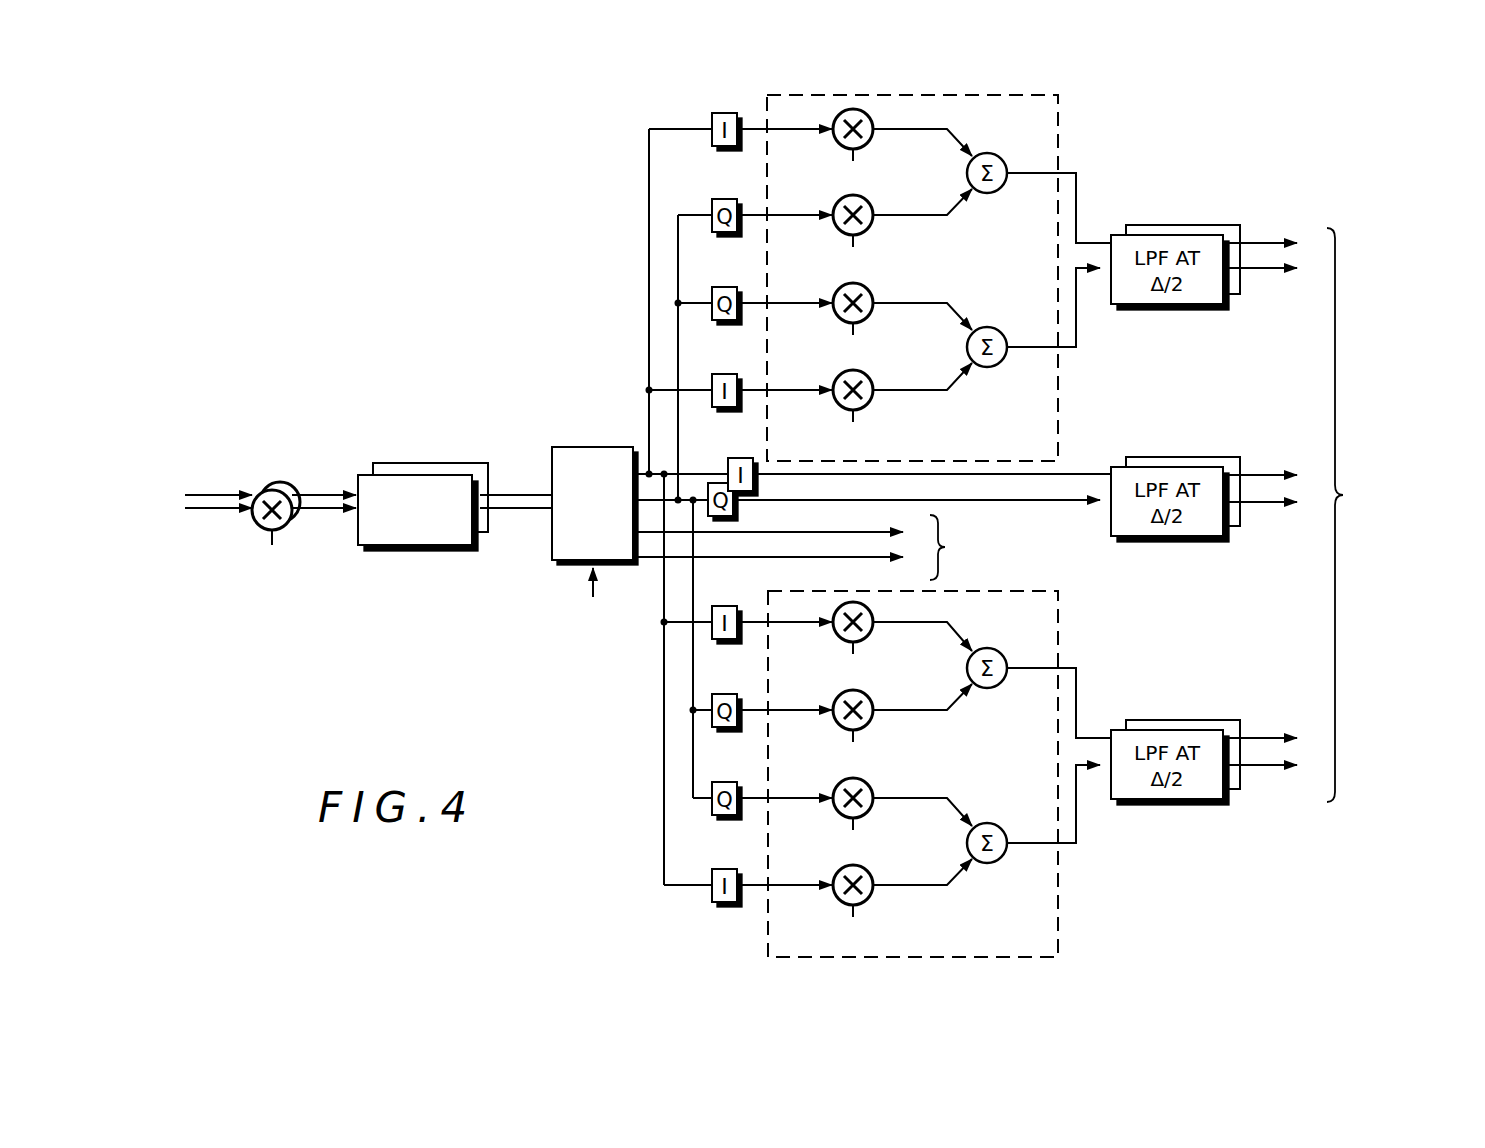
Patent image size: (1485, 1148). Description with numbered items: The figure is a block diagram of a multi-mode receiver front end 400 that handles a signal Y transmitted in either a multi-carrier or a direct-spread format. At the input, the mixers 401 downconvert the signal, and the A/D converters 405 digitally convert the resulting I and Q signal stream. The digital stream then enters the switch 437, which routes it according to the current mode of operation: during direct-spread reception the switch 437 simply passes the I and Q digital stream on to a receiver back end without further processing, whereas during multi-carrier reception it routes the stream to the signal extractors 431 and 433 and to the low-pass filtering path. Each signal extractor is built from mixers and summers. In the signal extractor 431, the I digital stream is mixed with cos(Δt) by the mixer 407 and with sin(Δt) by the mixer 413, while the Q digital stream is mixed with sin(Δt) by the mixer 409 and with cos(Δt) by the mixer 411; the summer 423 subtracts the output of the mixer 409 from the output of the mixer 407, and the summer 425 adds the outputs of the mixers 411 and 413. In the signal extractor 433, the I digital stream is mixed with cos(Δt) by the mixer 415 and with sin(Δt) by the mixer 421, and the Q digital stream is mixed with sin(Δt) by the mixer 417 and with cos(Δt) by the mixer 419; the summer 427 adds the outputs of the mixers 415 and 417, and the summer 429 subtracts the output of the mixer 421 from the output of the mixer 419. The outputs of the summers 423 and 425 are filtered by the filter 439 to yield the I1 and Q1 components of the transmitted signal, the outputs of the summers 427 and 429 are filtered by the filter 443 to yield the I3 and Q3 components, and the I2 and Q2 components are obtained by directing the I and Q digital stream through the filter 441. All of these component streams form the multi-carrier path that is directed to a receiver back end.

The multi-mode receiver front end 400 is at (822, 526).
The mixer 401 is at (282, 482).
The A/D converter 405 is at (414, 463).
The mixer 407 is at (868, 118).
The mixer 409 is at (868, 204).
The mixer 411 is at (868, 292).
The mixer 413 is at (868, 379).
The mixer 415 is at (868, 611).
The mixer 417 is at (868, 699).
The mixer 419 is at (868, 787).
The mixer 421 is at (868, 874).
The summer 423 is at (1000, 188).
The summer 425 is at (1000, 362).
The summer 427 is at (1000, 683).
The summer 429 is at (1000, 858).
The signal extractor 431 is at (1058, 118).
The signal extractor 433 is at (1058, 612).
The switch 437 is at (593, 447).
The filter 439 is at (1167, 228).
The filter 441 is at (1167, 460).
The filter 443 is at (1167, 723).